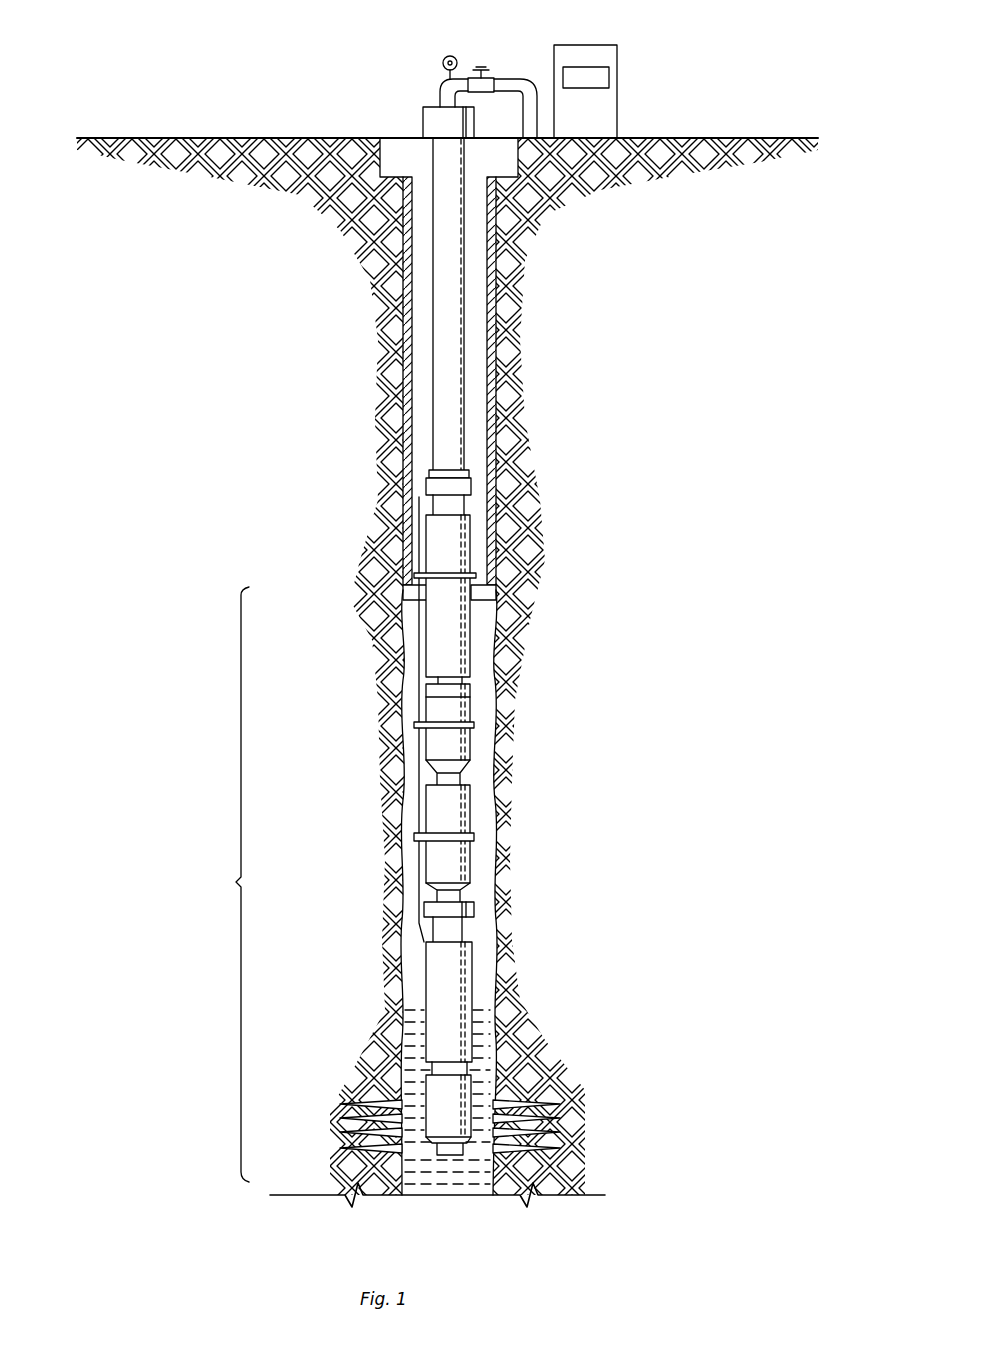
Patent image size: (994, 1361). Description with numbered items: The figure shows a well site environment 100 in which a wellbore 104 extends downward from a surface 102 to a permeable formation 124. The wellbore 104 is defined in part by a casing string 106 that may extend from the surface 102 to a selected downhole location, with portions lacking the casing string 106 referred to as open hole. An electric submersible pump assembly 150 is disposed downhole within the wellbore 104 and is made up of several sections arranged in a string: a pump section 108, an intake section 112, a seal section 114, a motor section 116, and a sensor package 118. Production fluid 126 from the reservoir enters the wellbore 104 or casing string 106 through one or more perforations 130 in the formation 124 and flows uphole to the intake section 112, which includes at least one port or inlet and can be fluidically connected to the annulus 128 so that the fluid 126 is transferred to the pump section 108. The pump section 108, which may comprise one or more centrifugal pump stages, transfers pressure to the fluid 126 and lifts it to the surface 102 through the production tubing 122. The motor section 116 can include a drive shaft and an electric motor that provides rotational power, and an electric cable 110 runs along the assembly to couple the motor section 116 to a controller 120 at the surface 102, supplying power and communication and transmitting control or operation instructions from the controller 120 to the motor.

The well site environment 100 is at (150, 66).
The surface 102 is at (752, 138).
The wellbore 104 is at (497, 372).
The casing string 106 is at (412, 440).
The pump section 108 is at (447, 607).
The electric cable 110 is at (418, 668).
The intake section 112 is at (447, 708).
The seal section 114 is at (442, 811).
The motor section 116 is at (443, 977).
The sensor package 118 is at (443, 1095).
The controller 120 is at (617, 58).
The production tubing 122 is at (445, 306).
The permeable formation 124 is at (615, 527).
The production fluid 126 is at (477, 1022).
The annulus 128 is at (478, 952).
The perforations 130 is at (520, 1100).
The electric submersible pump assembly 150 is at (223, 884).